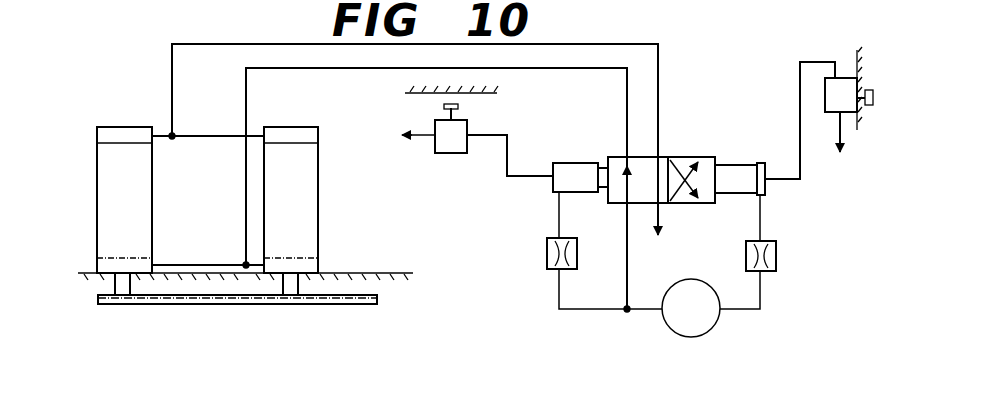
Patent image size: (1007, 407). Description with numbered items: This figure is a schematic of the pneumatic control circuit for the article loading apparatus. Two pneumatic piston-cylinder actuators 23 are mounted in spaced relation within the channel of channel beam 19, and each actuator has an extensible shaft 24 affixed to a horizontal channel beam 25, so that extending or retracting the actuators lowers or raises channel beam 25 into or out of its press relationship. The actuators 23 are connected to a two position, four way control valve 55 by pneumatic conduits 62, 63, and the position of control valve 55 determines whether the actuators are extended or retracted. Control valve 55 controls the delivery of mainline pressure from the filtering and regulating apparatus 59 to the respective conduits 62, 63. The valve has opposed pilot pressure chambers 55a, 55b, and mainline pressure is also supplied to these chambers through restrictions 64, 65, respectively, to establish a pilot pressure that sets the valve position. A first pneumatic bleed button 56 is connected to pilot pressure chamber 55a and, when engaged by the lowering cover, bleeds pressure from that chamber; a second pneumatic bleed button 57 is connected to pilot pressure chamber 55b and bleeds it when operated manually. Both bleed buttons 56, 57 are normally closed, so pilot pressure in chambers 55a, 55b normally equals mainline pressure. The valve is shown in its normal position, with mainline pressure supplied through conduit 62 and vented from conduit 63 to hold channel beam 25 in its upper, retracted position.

The channel beam 19 is at (373, 272).
The pneumatic piston-cylinder actuators 23 is at (107, 192).
The extensible shaft 24 is at (115, 284).
The horizontal channel beam 25 is at (240, 305).
The two position four way control valve 55 is at (712, 158).
The pilot pressure chamber 55a is at (570, 165).
The pilot pressure chamber 55b is at (740, 170).
The first pneumatic bleed button 56 is at (441, 153).
The second pneumatic bleed button 57 is at (840, 78).
The filtering and regulating apparatus 59 is at (679, 338).
The pneumatic conduit 62 is at (303, 68).
The pneumatic conduit 63 is at (278, 43).
The restriction 64 is at (546, 268).
The restriction 65 is at (777, 262).